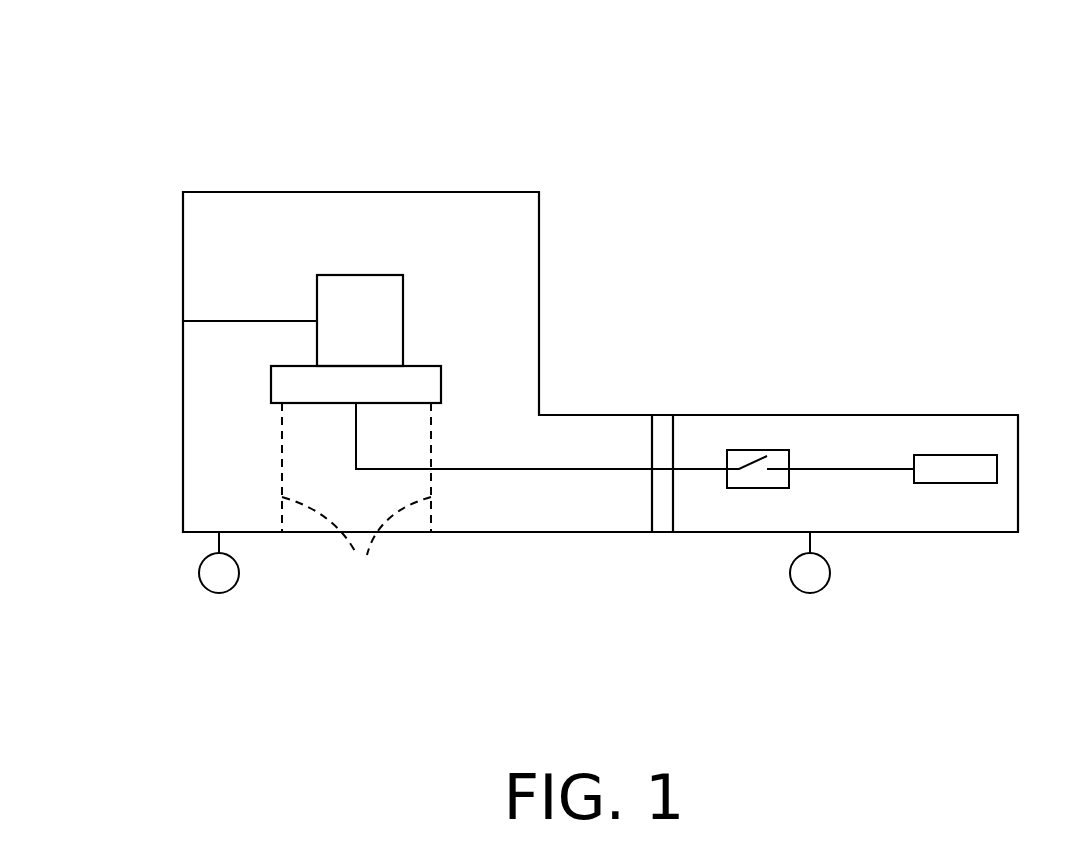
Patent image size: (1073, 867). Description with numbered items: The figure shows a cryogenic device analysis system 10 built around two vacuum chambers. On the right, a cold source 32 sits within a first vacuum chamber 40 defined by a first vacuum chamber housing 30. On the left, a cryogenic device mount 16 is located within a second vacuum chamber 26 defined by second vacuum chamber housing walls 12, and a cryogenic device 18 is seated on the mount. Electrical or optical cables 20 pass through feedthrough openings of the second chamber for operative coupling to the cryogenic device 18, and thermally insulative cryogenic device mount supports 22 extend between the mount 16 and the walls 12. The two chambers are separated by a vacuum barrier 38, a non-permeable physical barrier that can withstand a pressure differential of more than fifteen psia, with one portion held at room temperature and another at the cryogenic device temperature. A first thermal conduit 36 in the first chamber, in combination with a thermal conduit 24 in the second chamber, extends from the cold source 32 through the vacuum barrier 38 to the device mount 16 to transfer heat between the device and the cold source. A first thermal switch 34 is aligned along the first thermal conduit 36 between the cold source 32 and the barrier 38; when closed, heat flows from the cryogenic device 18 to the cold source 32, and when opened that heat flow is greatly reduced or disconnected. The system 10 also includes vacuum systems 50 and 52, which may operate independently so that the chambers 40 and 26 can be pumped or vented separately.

The cryogenic device analysis system 10 is at (935, 118).
The second vacuum chamber housing 12 is at (350, 192).
The cryogenic device mount 16 is at (424, 366).
The cryogenic device 18 is at (372, 275).
The electrical or optical cables 20 is at (240, 321).
The thermally insulative cryogenic device mount supports 22 is at (356, 494).
The thermal conduit 24 is at (693, 469).
The second vacuum chamber 26 is at (248, 238).
The first vacuum chamber housing 30 is at (737, 415).
The cold source 32 is at (963, 455).
The first thermal switch 34 is at (773, 450).
The first thermal conduit 36 is at (852, 469).
The vacuum barrier 38 is at (662, 432).
The first vacuum chamber 40 is at (937, 513).
The vacuum system 50 is at (199, 573).
The vacuum system 52 is at (790, 573).